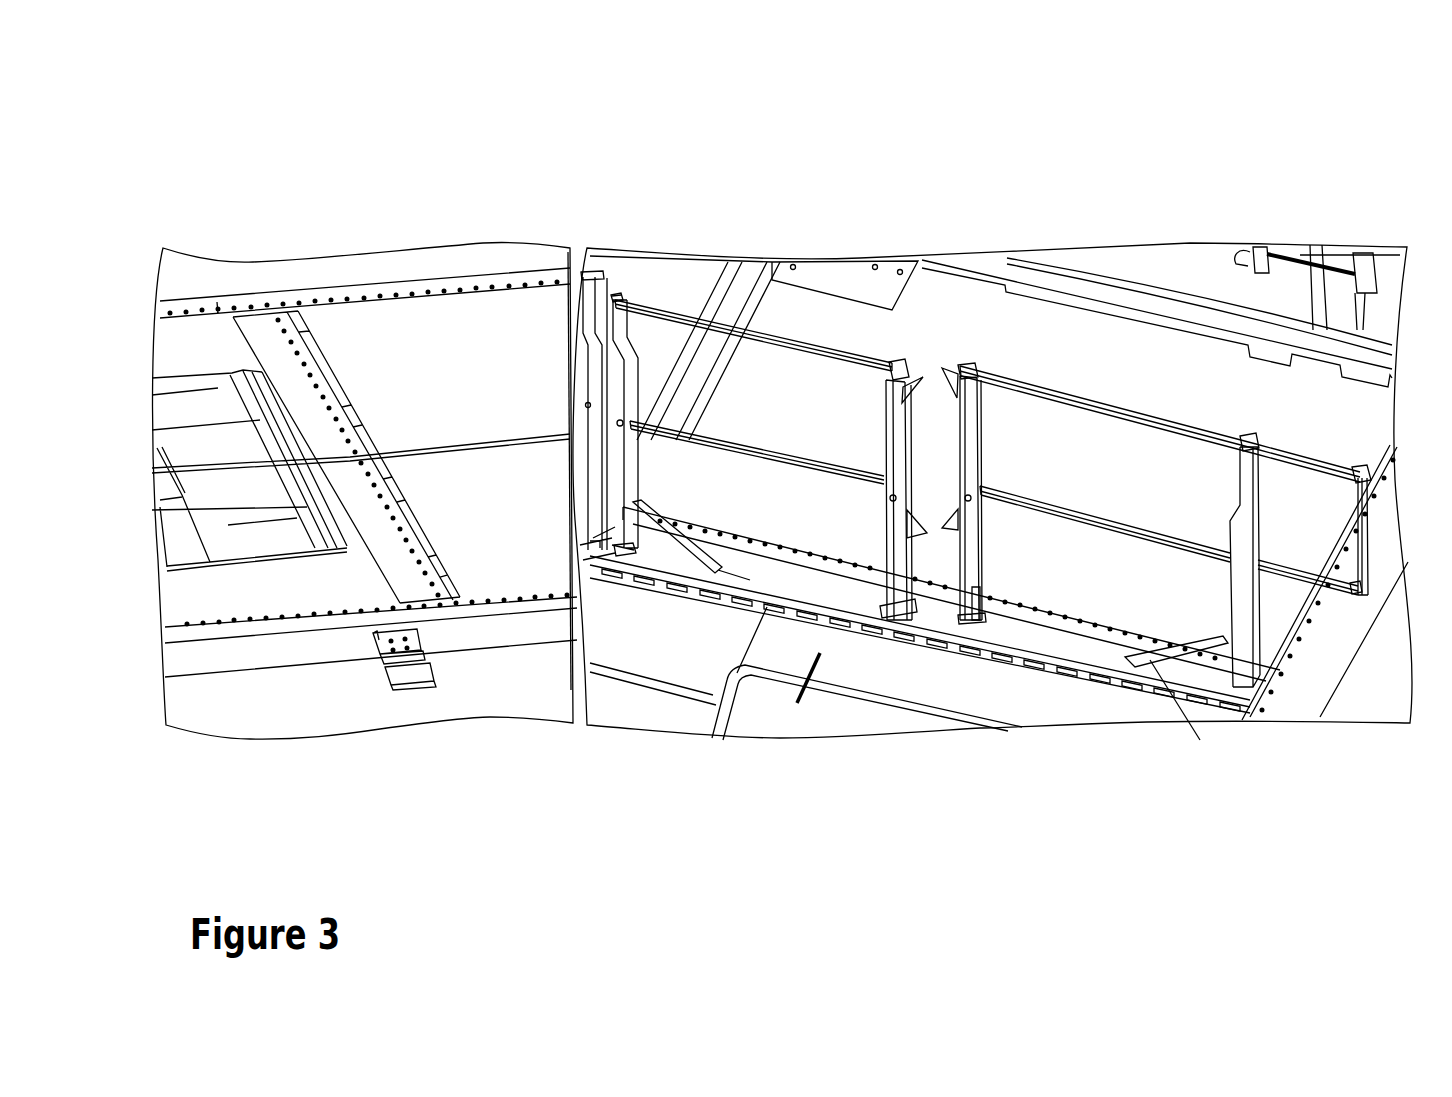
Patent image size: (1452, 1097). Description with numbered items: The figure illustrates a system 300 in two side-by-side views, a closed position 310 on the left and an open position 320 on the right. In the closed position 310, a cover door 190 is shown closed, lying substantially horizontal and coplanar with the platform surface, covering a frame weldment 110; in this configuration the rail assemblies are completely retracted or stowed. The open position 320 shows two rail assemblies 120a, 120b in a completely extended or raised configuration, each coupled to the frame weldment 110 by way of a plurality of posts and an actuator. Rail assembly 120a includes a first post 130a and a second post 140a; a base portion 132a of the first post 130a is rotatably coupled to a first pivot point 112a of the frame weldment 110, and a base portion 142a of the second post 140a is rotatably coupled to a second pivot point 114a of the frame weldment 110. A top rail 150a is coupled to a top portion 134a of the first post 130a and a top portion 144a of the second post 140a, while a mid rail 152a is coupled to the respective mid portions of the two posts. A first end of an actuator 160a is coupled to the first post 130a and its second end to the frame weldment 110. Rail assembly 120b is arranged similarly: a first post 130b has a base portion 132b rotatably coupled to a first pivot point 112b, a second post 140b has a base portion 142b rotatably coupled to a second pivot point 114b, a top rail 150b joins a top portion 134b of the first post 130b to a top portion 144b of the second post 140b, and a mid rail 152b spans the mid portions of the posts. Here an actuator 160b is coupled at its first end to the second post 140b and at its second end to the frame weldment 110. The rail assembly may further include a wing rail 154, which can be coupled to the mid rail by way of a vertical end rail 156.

The system 300 is at (1357, 112).
The closed position 310 is at (383, 762).
The open position 320 is at (880, 757).
The frame weldment 110 is at (370, 582).
The first pivot point 112a is at (688, 529).
The first pivot point 112b is at (988, 616).
The second pivot point 114a is at (888, 603).
The second pivot point 114b is at (1266, 654).
The rail assembly 120a is at (904, 357).
The rail assembly 120b is at (1110, 364).
The first post 130a is at (630, 355).
The first post 130b is at (983, 452).
The base portion 132a is at (652, 546).
The base portion 132b is at (971, 588).
The top portion 134a is at (622, 297).
The top portion 134b is at (975, 366).
The second post 140a is at (885, 443).
The second post 140b is at (1240, 493).
The base portion 142a is at (892, 598).
The base portion 142b is at (1223, 640).
The top portion 144a is at (897, 360).
The top portion 144b is at (1250, 437).
The top rail 150a is at (743, 327).
The top rail 150b is at (1097, 397).
The mid rail 152a is at (713, 436).
The mid rail 152b is at (1042, 487).
The wing rail 154 is at (1297, 447).
The vertical end rail 156 is at (1353, 505).
The actuator 160a is at (695, 558).
The actuator 160b is at (1190, 725).
The cover door 190 is at (367, 552).